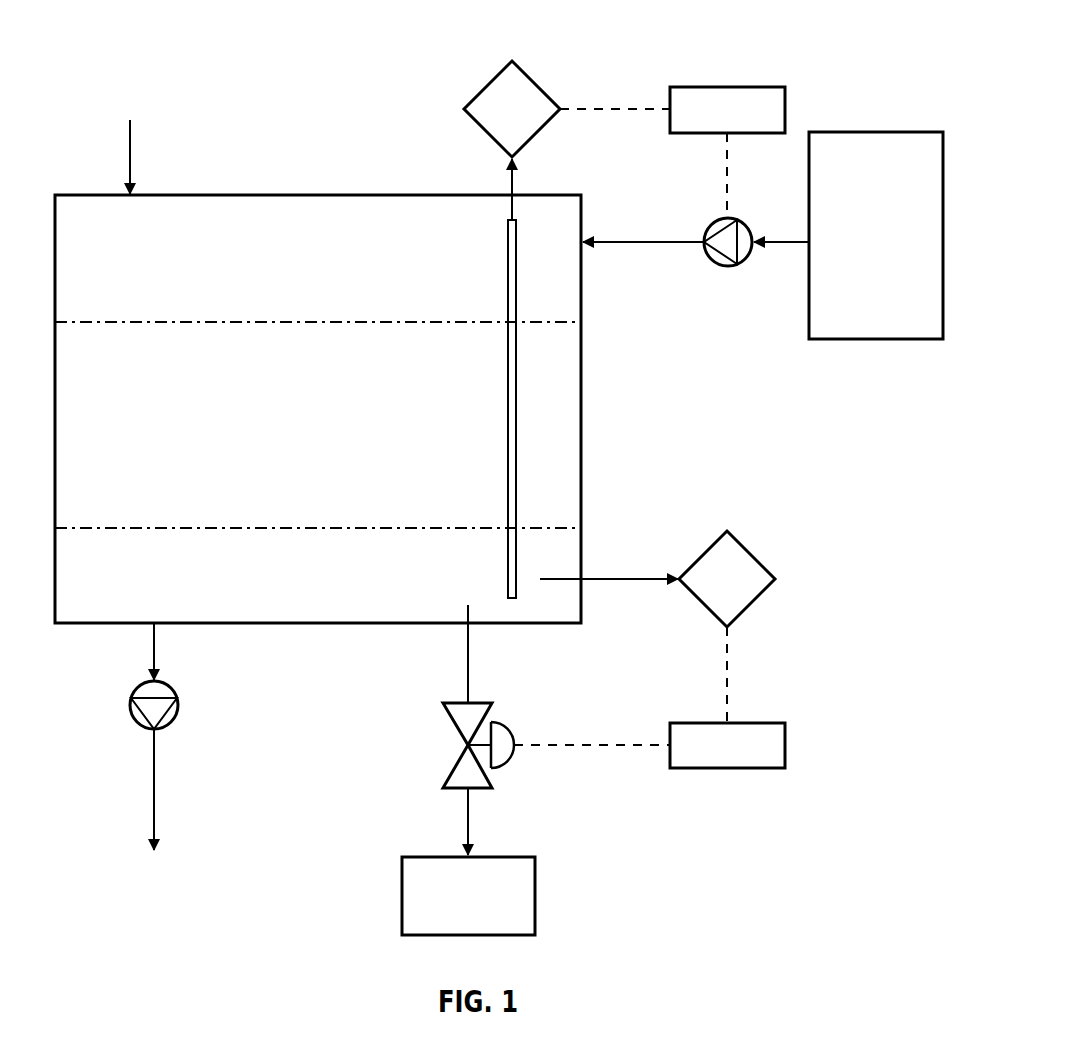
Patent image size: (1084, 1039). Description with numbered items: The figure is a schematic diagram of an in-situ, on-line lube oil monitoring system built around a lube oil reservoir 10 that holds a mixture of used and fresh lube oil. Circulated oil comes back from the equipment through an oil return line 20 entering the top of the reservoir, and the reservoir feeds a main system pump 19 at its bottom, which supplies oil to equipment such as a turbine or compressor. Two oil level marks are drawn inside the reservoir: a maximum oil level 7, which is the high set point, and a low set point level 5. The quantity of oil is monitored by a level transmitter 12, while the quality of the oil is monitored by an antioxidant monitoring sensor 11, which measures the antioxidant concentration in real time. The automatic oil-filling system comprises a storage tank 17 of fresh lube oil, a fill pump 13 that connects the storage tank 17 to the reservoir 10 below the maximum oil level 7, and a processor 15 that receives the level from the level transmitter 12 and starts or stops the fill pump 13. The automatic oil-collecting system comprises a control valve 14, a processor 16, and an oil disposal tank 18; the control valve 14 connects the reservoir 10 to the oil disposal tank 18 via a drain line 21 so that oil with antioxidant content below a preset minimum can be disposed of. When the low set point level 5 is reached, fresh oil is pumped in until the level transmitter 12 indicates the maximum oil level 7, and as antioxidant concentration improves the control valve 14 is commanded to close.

The low set point level 5 is at (131, 572).
The maximum oil level 7 is at (131, 308).
The lube oil reservoir 10 is at (327, 440).
The antioxidant monitoring sensor 11 is at (743, 593).
The level transmitter 12 is at (528, 123).
The fill pump 13 is at (731, 267).
The control valve 14 is at (443, 703).
The processor 15 is at (744, 123).
The processor 16 is at (744, 758).
The storage tank 17 is at (893, 252).
The oil disposal tank 18 is at (485, 910).
The main system pump 19 is at (178, 708).
The oil return line 20 is at (131, 158).
The drain line 21 is at (470, 643).